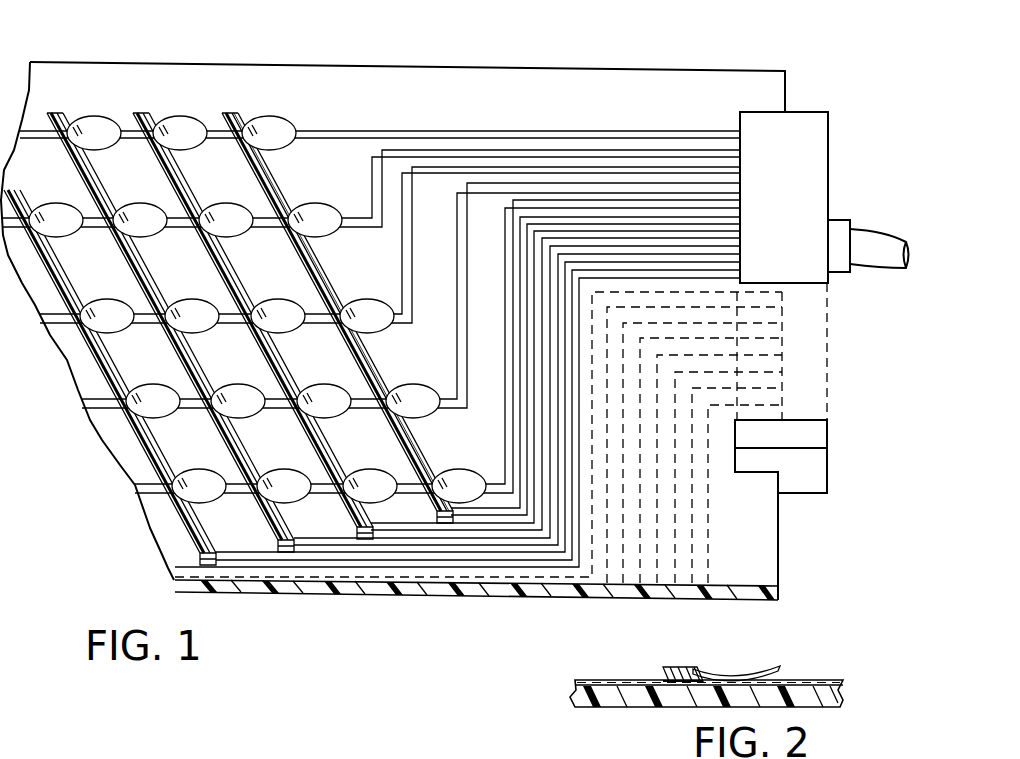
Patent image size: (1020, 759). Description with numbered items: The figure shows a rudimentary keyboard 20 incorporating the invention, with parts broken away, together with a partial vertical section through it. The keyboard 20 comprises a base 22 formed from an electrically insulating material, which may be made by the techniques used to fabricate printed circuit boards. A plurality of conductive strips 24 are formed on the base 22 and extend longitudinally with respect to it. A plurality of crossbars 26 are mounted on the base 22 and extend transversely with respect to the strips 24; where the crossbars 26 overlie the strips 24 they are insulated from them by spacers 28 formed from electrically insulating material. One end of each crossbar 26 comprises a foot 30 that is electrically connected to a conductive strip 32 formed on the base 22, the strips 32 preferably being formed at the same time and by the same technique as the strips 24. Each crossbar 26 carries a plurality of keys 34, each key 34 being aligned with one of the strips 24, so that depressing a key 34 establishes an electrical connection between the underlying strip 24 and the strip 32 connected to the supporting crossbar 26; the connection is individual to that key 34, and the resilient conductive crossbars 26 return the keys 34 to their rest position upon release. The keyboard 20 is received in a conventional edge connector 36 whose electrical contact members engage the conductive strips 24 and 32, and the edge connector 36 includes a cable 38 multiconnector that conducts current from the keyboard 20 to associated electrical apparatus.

In FIG. 1, the keyboard 20 is at (136, 508).
In FIG. 2, the keyboard 20 is at (564, 688).
In FIG. 1, the base 22 is at (299, 598).
In FIG. 2, the base 22 is at (680, 700).
In FIG. 1, the conductive strips 24 is at (522, 207).
In FIG. 2, the conductive strips 24 is at (583, 680).
In FIG. 1, the crossbars 26 is at (226, 106).
In FIG. 2, the crossbars 26 is at (686, 663).
In FIG. 1, the spacers 28 is at (352, 357).
In FIG. 2, the spacers 28 is at (665, 678).
In FIG. 1, the foot 30 is at (432, 512).
In FIG. 1, the conductive strip 32 is at (544, 565).
In FIG. 1, the keys 34 is at (143, 214).
In FIG. 2, the keys 34 is at (749, 668).
In FIG. 1, the edge connector 36 is at (784, 128).
In FIG. 1, the cable 38 is at (886, 250).